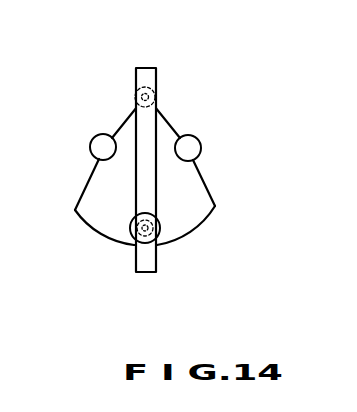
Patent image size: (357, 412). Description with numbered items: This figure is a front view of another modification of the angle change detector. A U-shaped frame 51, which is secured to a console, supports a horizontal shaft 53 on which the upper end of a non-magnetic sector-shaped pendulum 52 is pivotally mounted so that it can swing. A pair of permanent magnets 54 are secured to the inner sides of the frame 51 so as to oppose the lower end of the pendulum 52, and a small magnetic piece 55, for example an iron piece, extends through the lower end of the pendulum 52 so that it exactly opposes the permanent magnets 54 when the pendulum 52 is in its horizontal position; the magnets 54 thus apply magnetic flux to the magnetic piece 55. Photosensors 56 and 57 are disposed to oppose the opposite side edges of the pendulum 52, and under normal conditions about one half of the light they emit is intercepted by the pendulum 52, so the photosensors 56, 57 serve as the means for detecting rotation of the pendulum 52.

The U-shaped frame 51 is at (156, 70).
The sector-shaped pendulum 52 is at (217, 206).
The horizontal shaft 53 is at (145, 97).
The permanent magnets 54 is at (170, 242).
The magnetic piece 55 is at (128, 244).
The photosensor 56 is at (90, 147).
The photosensor 57 is at (201, 148).